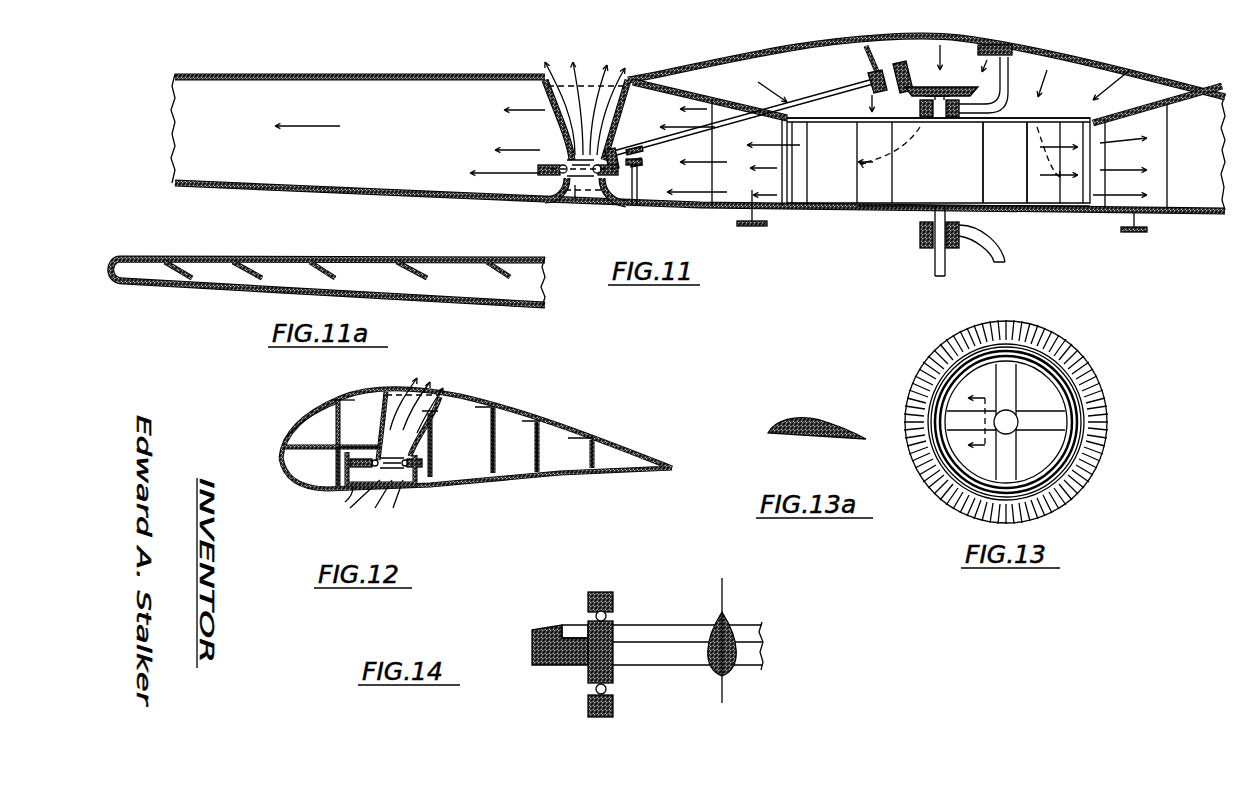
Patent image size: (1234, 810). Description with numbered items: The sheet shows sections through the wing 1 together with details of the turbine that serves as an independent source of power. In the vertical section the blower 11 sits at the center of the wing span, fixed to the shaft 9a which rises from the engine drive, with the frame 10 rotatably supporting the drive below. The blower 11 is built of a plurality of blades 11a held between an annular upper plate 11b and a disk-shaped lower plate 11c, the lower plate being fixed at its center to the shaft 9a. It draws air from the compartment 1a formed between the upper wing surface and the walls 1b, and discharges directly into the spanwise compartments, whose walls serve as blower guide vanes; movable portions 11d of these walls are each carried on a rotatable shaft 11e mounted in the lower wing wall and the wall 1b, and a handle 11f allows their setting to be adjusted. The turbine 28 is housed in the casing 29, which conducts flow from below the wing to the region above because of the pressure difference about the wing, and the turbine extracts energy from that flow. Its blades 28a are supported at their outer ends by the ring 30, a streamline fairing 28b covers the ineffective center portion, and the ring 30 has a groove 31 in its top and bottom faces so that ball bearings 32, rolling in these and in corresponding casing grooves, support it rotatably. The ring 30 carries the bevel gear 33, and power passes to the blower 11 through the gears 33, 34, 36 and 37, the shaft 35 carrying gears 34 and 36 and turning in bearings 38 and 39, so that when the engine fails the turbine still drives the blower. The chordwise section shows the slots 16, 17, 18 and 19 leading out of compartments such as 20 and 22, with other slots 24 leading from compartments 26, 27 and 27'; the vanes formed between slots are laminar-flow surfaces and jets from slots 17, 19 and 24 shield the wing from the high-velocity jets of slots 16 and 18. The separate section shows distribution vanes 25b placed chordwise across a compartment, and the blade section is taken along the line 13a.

In FIG. 11, the wing 1 is at (422, 74).
In FIG. 11A, the wing 1 is at (450, 260).
In FIG. 12, the wing 1 is at (590, 448).
In FIG. 11, the compartment 1a is at (1108, 78).
In FIG. 11, the walls 1b is at (1140, 107).
In FIG. 11, the shaft 9a is at (920, 105).
In FIG. 11, the frame 10 is at (990, 256).
In FIG. 11, the blower 11 is at (870, 170).
In FIG. 11, the blades 11a is at (983, 163).
In FIG. 11, the upper plate 11b is at (1010, 118).
In FIG. 11, the lower plate 11c is at (1040, 208).
In FIG. 11, the movable portions 11d is at (752, 185).
In FIG. 11, the rotatable shaft 11e is at (760, 222).
In FIG. 11, the handle 11f is at (1135, 232).
In FIG. 13, the section line 13a is at (976, 424).
In FIG. 12, the slot 16 is at (340, 402).
In FIG. 12, the slot 17 is at (350, 398).
In FIG. 12, the slot 18 is at (345, 482).
In FIG. 12, the slot 19 is at (367, 487).
In FIG. 12, the compartment 20 is at (342, 430).
In FIG. 12, the compartment 22 is at (320, 460).
In FIG. 12, the slots 24 is at (552, 423).
In FIG. 11A, the distribution vanes 25b is at (398, 237).
In FIG. 12, the compartment 26 is at (461, 442).
In FIG. 12, the compartment 27 is at (515, 440).
In FIG. 12, the compartment 27' is at (564, 447).
In FIG. 11, the turbine 28 is at (590, 180).
In FIG. 12, the turbine 28 is at (385, 458).
In FIG. 13A, the blades 28a is at (770, 430).
In FIG. 13, the blades 28a is at (1016, 455).
In FIG. 14, the blades 28a is at (646, 657).
In FIG. 13, the streamline fairing 28b is at (1006, 422).
In FIG. 14, the streamline fairing 28b is at (727, 627).
In FIG. 11, the casing 29 is at (543, 98).
In FIG. 12, the casing 29 is at (408, 392).
In FIG. 14, the casing 29 is at (611, 598).
In FIG. 12, the ring 30 is at (423, 464).
In FIG. 13, the ring 30 is at (1069, 392).
In FIG. 14, the ring 30 is at (532, 643).
In FIG. 13, the groove 31 is at (932, 374).
In FIG. 14, the groove 31 is at (614, 628).
In FIG. 11, the ball bearings 32 is at (540, 178).
In FIG. 14, the ball bearings 32 is at (596, 613).
In FIG. 11, the bevel gear 33 is at (545, 166).
In FIG. 14, the bevel gear 33 is at (546, 627).
In FIG. 11, the gear 34 is at (633, 148).
In FIG. 11, the shaft 35 is at (625, 152).
In FIG. 11, the gear 36 is at (906, 68).
In FIG. 11, the gear 37 is at (935, 87).
In FIG. 11, the bearing 38 is at (640, 176).
In FIG. 11, the bearing 39 is at (880, 70).